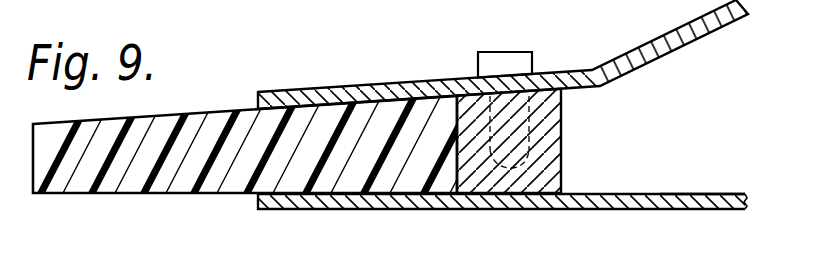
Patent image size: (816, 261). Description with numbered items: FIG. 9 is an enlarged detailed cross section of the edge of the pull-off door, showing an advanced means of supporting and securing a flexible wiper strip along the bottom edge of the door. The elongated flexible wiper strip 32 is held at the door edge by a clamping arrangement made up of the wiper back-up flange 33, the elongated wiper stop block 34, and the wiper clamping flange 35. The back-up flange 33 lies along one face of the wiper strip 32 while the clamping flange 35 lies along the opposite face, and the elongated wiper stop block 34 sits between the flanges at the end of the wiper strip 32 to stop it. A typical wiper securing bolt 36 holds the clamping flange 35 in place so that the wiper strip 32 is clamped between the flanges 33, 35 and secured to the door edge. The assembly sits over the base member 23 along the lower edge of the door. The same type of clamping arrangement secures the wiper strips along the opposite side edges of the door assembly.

The base plate 23 is at (655, 187).
The elongated flexible wiper strip 32 is at (147, 133).
The wiper back-up flange 33 is at (258, 203).
The elongated wiper stop block 34 is at (550, 172).
The wiper clamping flange 35 is at (572, 90).
The wiper securing bolt 36 is at (478, 59).